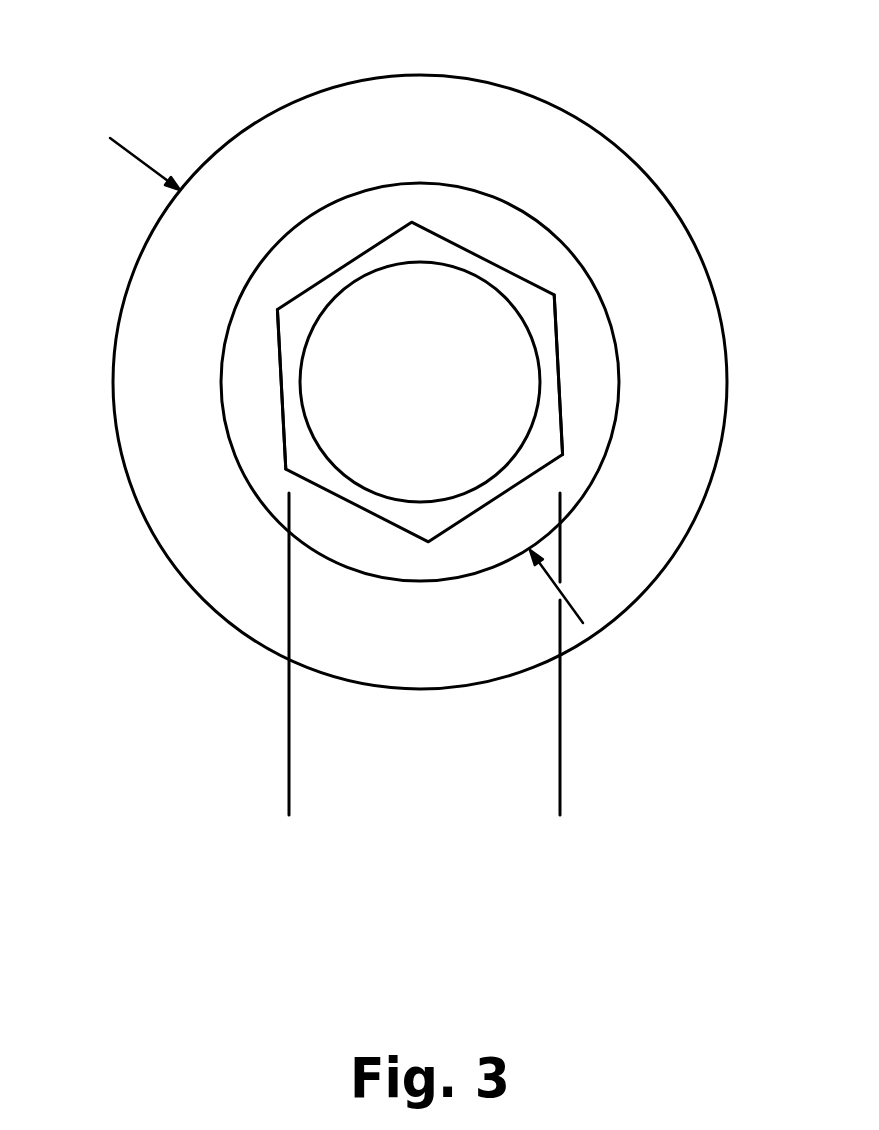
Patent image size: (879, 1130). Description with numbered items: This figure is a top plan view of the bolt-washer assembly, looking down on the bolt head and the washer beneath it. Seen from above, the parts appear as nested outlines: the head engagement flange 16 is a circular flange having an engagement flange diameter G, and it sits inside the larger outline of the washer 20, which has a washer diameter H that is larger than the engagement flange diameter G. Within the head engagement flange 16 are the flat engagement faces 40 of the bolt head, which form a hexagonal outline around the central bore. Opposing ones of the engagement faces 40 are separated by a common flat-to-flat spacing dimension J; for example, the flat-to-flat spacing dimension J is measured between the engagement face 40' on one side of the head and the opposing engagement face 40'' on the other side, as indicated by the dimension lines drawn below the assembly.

The head engagement flange 16 is at (378, 207).
The washer 20 is at (529, 117).
The engagement faces 40 is at (514, 341).
The engagement face 40' is at (690, 375).
The engagement face 40'' is at (149, 389).
The engagement flange diameter G is at (298, 205).
The washer diameter H is at (675, 576).
The flat-to-flat spacing dimension J is at (546, 792).